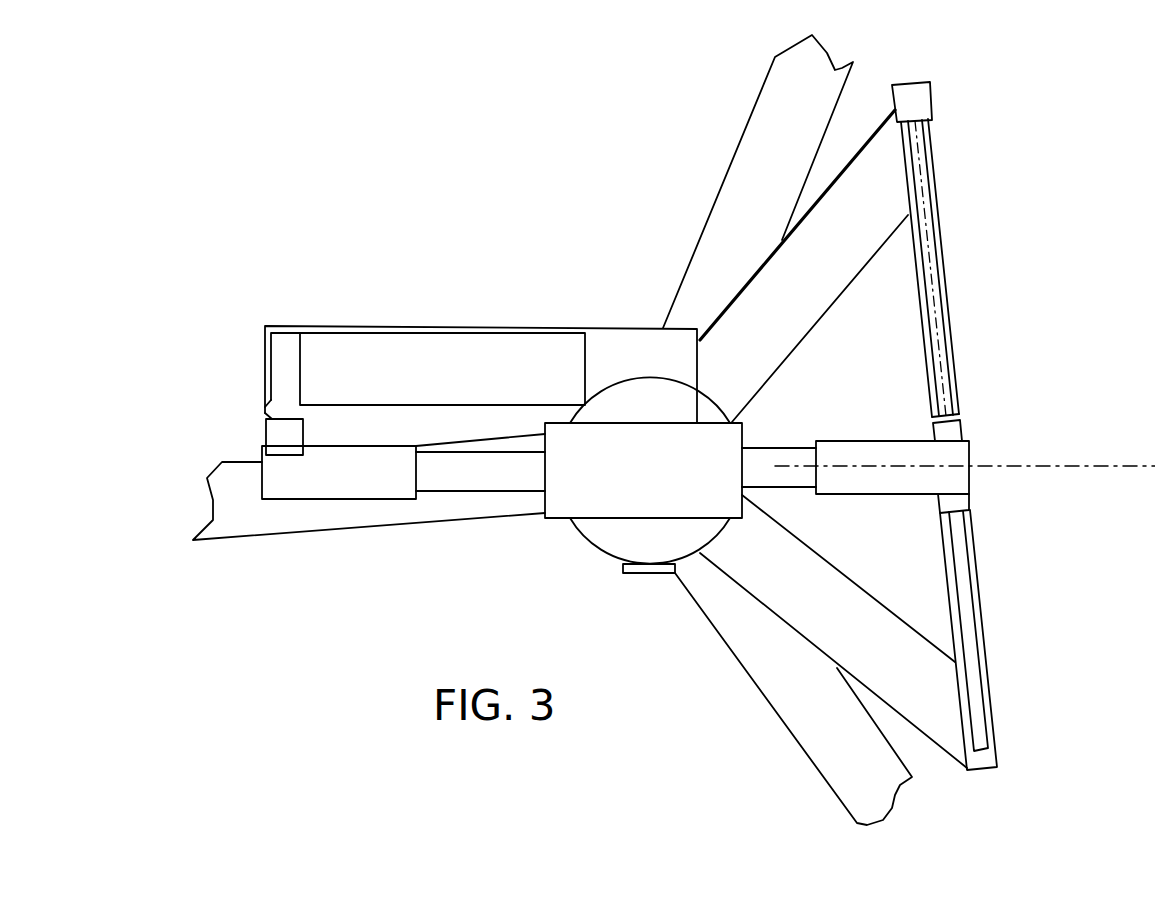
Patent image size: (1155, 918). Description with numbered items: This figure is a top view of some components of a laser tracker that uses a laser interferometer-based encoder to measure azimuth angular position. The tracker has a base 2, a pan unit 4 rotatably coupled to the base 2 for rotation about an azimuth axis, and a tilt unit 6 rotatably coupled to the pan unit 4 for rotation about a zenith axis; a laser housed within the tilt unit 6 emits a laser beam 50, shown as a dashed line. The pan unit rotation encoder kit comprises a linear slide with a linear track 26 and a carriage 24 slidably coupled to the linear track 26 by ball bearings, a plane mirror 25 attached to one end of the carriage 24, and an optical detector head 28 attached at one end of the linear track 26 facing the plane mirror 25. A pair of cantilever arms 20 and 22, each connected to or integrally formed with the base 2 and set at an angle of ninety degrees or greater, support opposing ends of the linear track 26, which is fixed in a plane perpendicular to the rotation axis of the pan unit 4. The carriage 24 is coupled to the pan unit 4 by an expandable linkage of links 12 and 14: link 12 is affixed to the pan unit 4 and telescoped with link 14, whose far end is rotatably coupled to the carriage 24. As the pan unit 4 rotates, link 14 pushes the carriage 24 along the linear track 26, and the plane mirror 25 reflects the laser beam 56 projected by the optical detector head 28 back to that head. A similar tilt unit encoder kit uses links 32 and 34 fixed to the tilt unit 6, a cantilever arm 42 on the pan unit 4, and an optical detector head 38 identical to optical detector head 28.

The base 2 is at (735, 205).
The pan unit 4 is at (602, 552).
The tilt unit 6 is at (583, 503).
The link 12 is at (775, 455).
The link 14 is at (848, 450).
The cantilever arm 20 is at (880, 600).
The cantilever arm 22 is at (825, 320).
The carriage 24 is at (972, 500).
The plane mirror 25 is at (950, 416).
The linear track 26 is at (965, 618).
The optical detector head 28 is at (920, 102).
The link 32 is at (470, 473).
The link 34 is at (340, 487).
The optical detector head 38 is at (277, 433).
The cantilever arm 42 is at (442, 347).
The laser beam 50 is at (1105, 462).
The laser beam 56 is at (930, 270).